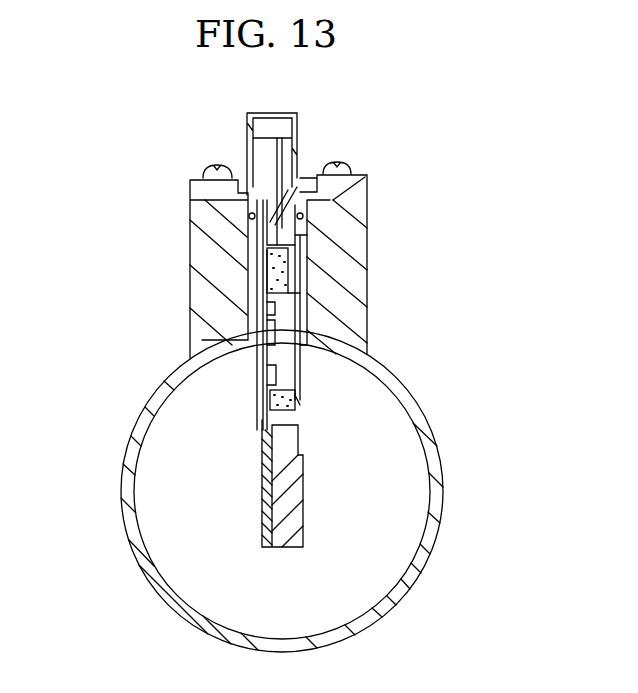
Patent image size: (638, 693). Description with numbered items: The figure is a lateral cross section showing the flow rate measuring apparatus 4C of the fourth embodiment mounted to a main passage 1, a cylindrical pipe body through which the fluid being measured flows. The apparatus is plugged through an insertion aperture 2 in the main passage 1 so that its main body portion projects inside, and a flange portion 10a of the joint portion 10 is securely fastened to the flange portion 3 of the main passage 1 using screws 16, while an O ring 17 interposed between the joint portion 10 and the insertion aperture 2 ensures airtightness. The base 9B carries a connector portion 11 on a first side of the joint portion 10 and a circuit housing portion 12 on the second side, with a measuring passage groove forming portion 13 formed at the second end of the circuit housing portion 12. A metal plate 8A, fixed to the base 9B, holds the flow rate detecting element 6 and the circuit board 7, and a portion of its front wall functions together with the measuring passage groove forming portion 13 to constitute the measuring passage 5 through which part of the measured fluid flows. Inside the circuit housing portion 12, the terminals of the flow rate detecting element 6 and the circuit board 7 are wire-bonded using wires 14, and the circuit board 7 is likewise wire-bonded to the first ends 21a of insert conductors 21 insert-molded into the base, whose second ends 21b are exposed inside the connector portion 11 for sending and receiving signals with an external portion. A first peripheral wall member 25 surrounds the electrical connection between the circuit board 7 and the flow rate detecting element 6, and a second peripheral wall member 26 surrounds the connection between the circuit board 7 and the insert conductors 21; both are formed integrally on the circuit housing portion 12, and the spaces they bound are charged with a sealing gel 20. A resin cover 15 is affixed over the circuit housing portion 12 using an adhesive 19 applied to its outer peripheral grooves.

The main passage 1 is at (138, 408).
The insertion aperture 2 is at (252, 303).
The flange portion 3 is at (358, 210).
The flow rate measuring apparatus 4C is at (318, 160).
The measuring passage 5 is at (272, 455).
The flow rate detecting element 6 is at (268, 431).
The circuit board 7 is at (280, 355).
The metal plate 8A is at (257, 383).
The base 9B is at (306, 502).
The joint portion 10 is at (200, 221).
The flange portion 10a is at (357, 188).
The connector portion 11 is at (246, 132).
The circuit housing portion 12 is at (305, 306).
The measuring passage groove forming portion 13 is at (300, 445).
The wires 14 is at (268, 266).
The resin cover 15 is at (305, 332).
The screws 16 is at (352, 163).
The O ring 17 is at (368, 228).
The adhesive 19 is at (305, 242).
The sealing gel 20 is at (262, 280).
The insert conductors 21 is at (200, 196).
The first end 21a is at (255, 240).
The second end 21b is at (276, 162).
The first peripheral wall member 25 is at (300, 380).
The second peripheral wall member 26 is at (302, 280).